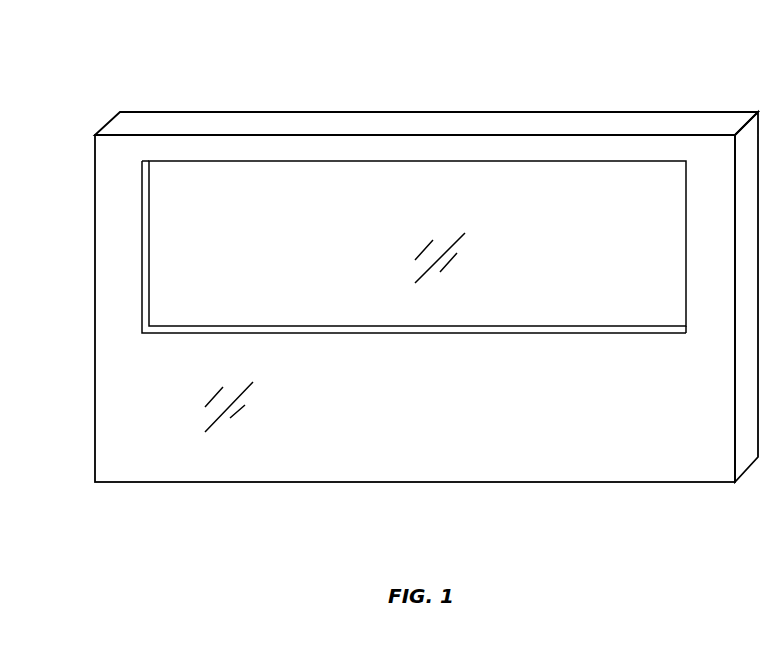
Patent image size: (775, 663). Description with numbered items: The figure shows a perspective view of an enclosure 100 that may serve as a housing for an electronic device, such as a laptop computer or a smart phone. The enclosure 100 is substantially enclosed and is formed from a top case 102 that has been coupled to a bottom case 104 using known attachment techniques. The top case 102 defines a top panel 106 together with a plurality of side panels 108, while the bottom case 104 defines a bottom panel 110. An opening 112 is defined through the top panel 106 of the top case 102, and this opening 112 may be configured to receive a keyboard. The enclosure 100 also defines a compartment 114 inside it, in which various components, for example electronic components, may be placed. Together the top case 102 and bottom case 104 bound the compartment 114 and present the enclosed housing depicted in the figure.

The enclosure 100 is at (114, 68).
The top case 102 is at (180, 383).
The bottom case 104 is at (490, 112).
The top panel 106 is at (415, 308).
The side panels 108 is at (426, 123).
The bottom panel 110 is at (417, 243).
The opening 112 is at (232, 333).
The compartment 114 is at (320, 241).